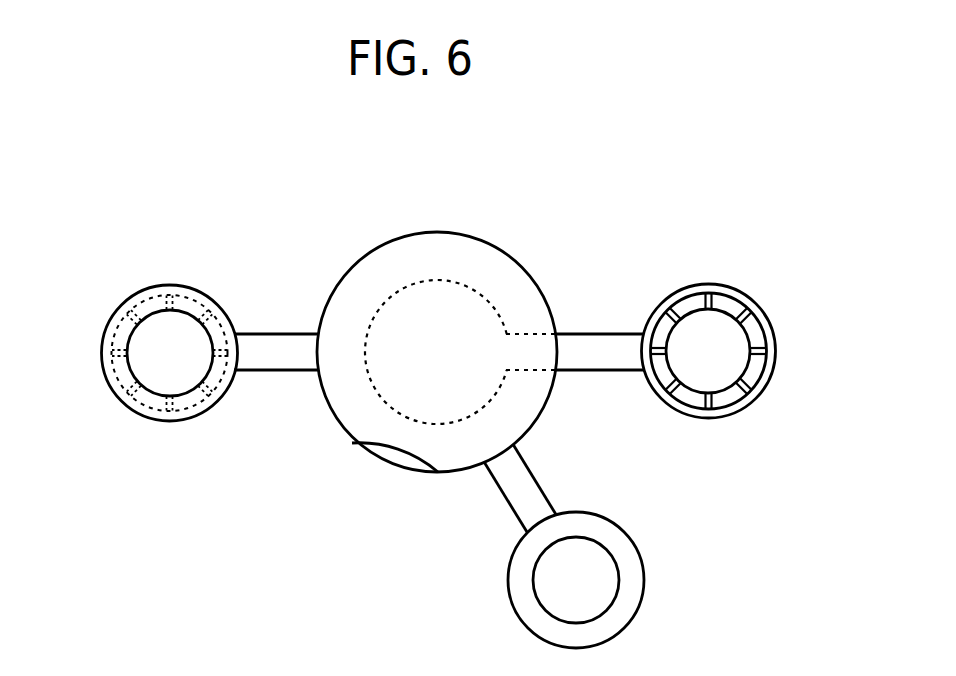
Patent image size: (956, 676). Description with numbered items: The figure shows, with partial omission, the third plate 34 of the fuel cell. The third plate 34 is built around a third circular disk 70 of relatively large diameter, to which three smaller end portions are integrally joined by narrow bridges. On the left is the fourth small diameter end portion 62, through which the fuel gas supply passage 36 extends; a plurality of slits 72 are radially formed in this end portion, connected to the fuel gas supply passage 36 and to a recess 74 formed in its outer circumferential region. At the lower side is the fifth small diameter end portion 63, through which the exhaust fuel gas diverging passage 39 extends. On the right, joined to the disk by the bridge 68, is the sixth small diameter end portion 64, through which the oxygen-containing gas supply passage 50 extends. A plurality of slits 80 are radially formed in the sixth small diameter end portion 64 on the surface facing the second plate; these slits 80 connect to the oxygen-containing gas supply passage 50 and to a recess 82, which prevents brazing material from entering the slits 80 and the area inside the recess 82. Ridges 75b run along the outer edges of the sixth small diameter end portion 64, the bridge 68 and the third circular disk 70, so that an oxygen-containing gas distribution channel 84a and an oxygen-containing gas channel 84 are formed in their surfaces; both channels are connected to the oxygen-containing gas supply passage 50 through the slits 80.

The third plate 34 is at (674, 165).
The third circular disk 70 is at (488, 235).
The ridges 75b is at (362, 443).
The oxygen-containing gas channel 84 is at (400, 263).
The oxygen-containing gas distribution channel 84a is at (590, 350).
The bridge 68 is at (608, 372).
The fourth small diameter end portion 62 is at (171, 325).
The fuel gas supply passage 36 is at (110, 379).
The recess 74 is at (113, 321).
The slits 72 is at (172, 294).
The sixth small diameter end portion 64 is at (734, 322).
The recess 82 is at (765, 316).
The oxygen-containing gas supply passage 50 is at (738, 364).
The slits 80 is at (705, 302).
The fifth small diameter end portion 63 is at (577, 580).
The exhaust fuel gas diverging passage 39 is at (610, 565).